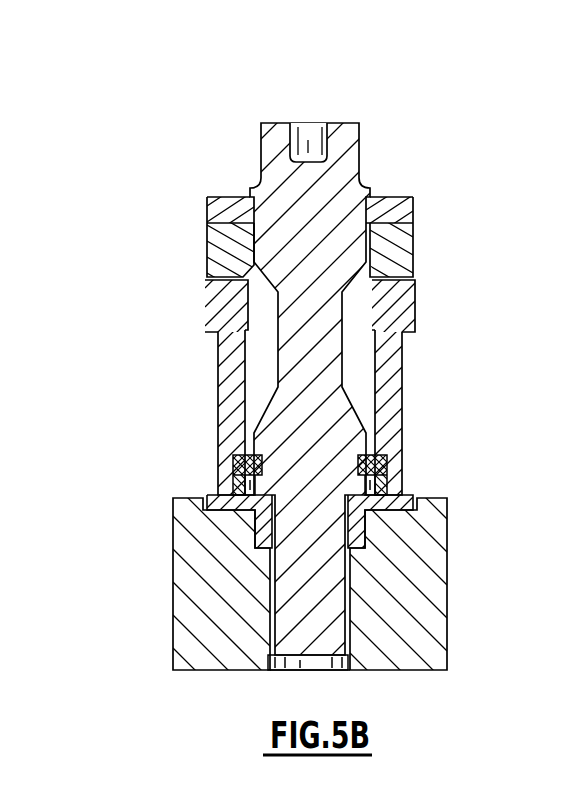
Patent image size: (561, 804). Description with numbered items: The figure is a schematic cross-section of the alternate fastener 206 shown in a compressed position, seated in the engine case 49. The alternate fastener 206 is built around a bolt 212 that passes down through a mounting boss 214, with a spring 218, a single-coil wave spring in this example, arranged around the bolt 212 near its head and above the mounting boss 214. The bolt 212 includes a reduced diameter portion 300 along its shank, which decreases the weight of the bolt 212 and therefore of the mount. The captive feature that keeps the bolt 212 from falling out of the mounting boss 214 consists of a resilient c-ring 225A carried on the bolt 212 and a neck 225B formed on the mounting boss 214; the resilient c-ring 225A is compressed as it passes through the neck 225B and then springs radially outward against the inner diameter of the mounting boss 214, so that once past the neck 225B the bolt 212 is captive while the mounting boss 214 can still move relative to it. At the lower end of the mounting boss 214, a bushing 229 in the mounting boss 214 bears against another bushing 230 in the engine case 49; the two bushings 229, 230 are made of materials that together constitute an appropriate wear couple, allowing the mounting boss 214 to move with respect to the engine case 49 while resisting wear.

The alternate fastener 206 is at (450, 128).
The engine case 49 is at (183, 573).
The spring 218 is at (412, 241).
The neck 225B is at (414, 310).
The mounting boss 214 is at (393, 418).
The bolt 212 is at (330, 356).
The reduced diameter portion 300 is at (276, 367).
The resilient c-ring 225A is at (232, 463).
The bushing 229 is at (406, 494).
The bushing 230 is at (413, 491).